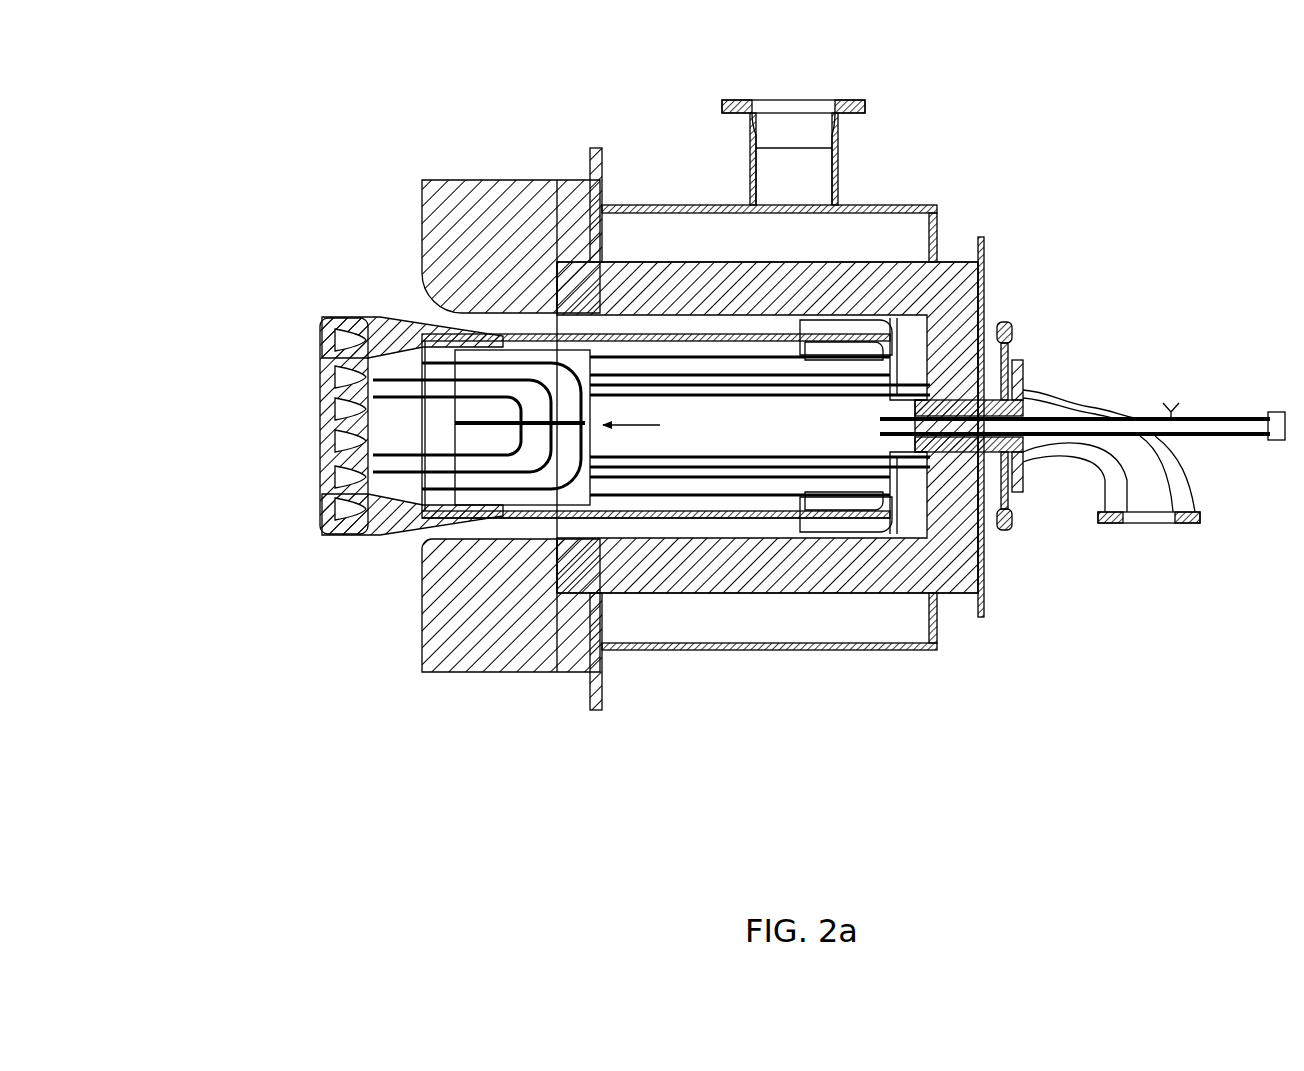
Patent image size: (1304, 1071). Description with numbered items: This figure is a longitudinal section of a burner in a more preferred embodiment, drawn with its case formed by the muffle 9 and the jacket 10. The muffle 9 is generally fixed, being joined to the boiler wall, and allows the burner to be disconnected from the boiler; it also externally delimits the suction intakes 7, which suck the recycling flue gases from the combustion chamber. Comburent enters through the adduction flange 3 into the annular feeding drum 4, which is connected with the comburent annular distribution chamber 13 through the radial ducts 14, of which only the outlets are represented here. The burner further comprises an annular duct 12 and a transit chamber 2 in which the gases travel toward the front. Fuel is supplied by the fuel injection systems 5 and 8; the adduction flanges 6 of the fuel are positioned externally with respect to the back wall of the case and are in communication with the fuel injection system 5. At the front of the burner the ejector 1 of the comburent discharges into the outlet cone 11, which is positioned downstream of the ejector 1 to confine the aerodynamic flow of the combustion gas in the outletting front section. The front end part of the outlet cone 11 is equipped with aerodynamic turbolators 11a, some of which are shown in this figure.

The ejector 1 is at (644, 426).
The transit chamber 2 is at (735, 432).
The adduction flange 3 is at (792, 113).
The annular feeding drum 4 is at (660, 232).
The fuel injection system 5 is at (918, 432).
The adduction flanges 6 is at (1268, 450).
The suction intakes 7 is at (430, 313).
The fuel injection system 8 is at (385, 393).
The muffle 9 is at (478, 208).
The jacket 10 is at (957, 282).
The outlet cone 11 is at (355, 522).
The aerodynamic turbolators 11a is at (322, 467).
The annular duct 12 is at (708, 322).
The comburent annular distribution chamber 13 is at (657, 505).
The radial ducts 14 is at (846, 345).